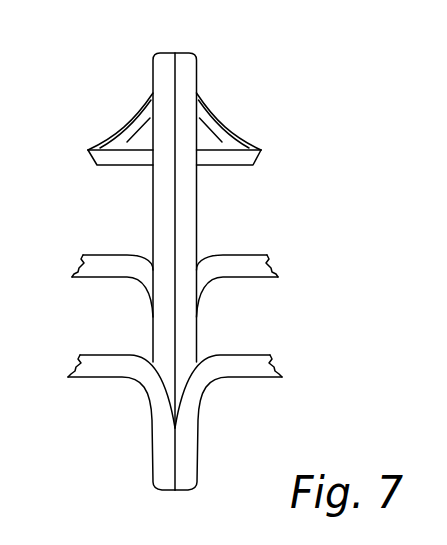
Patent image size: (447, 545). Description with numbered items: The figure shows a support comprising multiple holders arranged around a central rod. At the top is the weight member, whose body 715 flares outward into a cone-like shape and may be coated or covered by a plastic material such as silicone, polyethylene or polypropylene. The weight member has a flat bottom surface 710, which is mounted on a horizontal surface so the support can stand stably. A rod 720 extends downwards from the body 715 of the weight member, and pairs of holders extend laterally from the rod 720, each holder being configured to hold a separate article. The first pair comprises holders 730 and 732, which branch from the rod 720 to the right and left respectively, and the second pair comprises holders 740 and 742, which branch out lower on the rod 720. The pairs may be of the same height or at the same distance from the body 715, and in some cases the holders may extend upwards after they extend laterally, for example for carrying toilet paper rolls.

The rod 720 is at (193, 54).
The body 715 is at (217, 122).
The flat bottom surface 710 is at (257, 160).
The holder 730 is at (267, 253).
The holder 732 is at (82, 257).
The holder 740 is at (267, 357).
The holder 742 is at (83, 357).